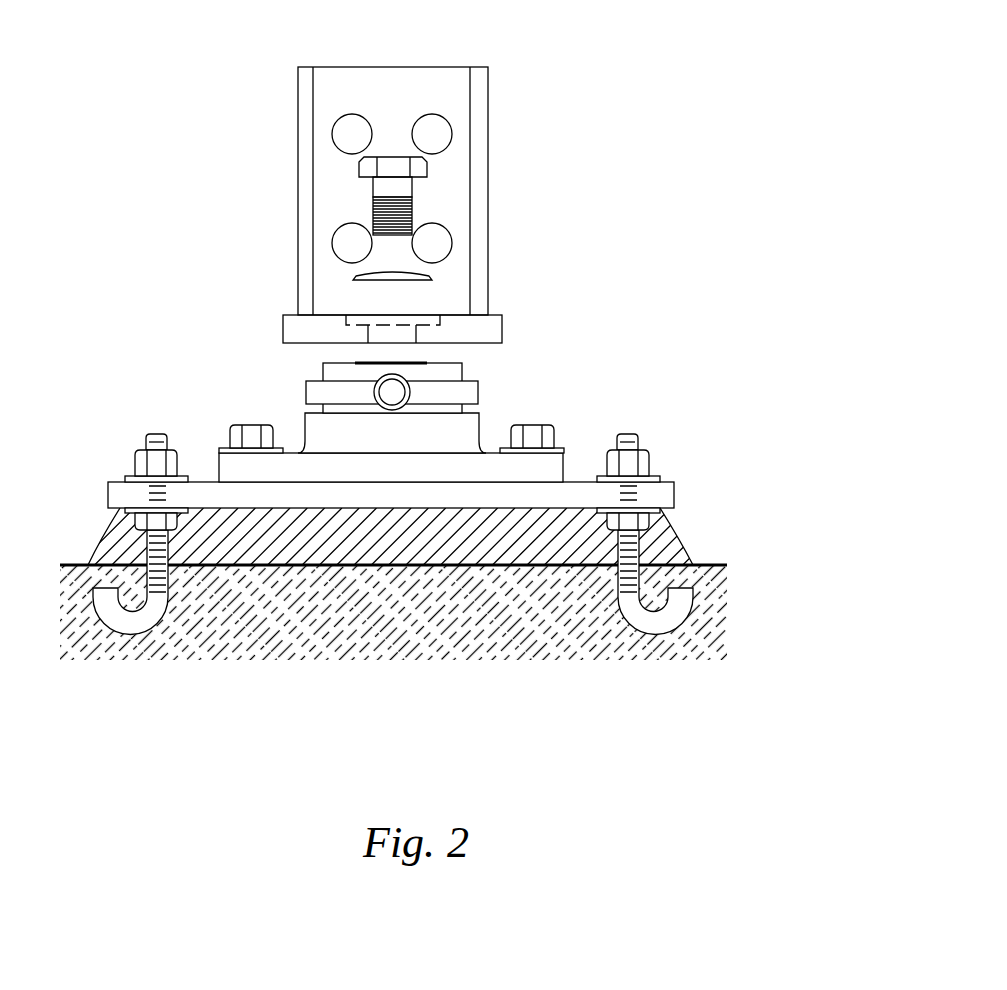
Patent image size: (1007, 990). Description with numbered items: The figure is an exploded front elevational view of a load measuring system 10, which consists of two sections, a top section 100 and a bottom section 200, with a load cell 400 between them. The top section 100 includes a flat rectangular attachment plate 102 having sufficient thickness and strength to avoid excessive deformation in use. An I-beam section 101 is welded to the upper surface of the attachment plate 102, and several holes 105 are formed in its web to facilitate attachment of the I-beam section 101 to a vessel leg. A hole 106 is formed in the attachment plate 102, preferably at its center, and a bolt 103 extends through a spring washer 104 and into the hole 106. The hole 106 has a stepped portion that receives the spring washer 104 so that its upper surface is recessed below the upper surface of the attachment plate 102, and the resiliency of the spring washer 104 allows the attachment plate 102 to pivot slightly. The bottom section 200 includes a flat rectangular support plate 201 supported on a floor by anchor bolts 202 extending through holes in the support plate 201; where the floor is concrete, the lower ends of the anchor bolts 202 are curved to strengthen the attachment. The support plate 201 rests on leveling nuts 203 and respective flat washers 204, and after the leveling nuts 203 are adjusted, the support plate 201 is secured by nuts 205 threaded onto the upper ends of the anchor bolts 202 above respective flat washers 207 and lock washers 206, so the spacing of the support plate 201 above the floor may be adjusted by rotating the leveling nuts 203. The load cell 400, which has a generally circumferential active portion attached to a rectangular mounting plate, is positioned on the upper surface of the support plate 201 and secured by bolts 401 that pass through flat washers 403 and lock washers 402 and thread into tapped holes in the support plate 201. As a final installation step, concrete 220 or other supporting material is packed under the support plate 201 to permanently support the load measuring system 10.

The load measuring system 10 is at (636, 96).
The top section 100 is at (216, 127).
The I-beam section 101 is at (488, 238).
The attachment plate 102 is at (503, 318).
The bolt 103 is at (358, 177).
The spring washer 104 is at (350, 275).
The holes 105 is at (340, 135).
The hole 106 is at (345, 312).
The bottom section 200 is at (730, 402).
The support plate 201 is at (108, 495).
The anchor bolts 202 is at (140, 556).
The leveling nuts 203 is at (120, 540).
The flat washers 204 is at (125, 514).
The nuts 205 is at (135, 468).
The lock washers 206 is at (128, 476).
The flat washers 207 is at (125, 479).
The concrete 220 is at (672, 552).
The load cell 400 is at (250, 370).
The bolts 401 is at (243, 428).
The lock washers 402 is at (220, 451).
The flat washers 403 is at (217, 450).